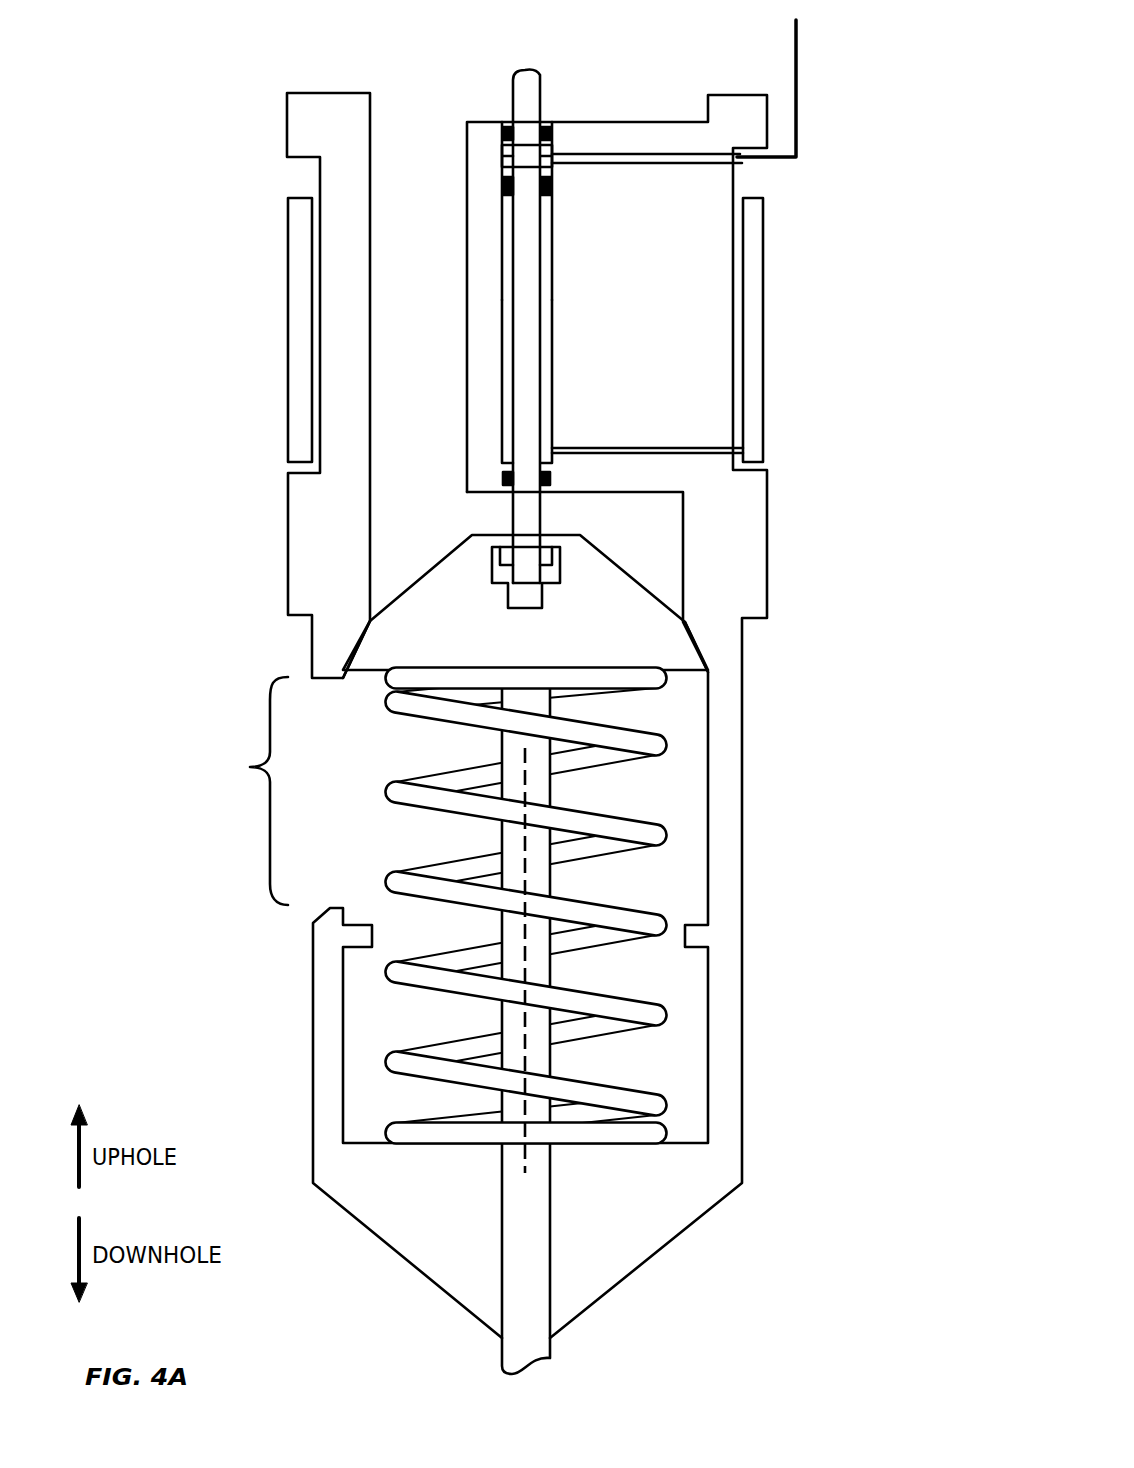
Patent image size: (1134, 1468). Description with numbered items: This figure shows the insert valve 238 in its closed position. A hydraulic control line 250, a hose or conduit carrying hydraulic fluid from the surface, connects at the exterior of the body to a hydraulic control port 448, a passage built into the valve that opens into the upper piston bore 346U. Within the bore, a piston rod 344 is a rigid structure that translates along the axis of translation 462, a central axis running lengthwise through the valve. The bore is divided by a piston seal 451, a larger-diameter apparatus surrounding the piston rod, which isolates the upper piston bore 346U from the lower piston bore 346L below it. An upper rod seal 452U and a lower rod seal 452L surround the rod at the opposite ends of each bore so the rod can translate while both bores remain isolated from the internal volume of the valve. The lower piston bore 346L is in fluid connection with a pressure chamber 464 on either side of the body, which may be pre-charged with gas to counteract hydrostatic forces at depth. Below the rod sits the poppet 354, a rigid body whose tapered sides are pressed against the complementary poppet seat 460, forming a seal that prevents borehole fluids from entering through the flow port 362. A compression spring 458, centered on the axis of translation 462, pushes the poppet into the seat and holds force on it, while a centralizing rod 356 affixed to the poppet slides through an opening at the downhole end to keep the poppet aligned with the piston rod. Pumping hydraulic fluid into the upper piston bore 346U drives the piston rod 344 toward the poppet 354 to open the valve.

The insert valve 238 is at (200, 67).
The hydraulic control line 250 is at (796, 45).
The hydraulic control port 448 is at (660, 158).
The upper piston bore 346U is at (502, 157).
The lower piston bore 346L is at (545, 395).
The piston rod 344 is at (538, 320).
The upper rod seal 452U is at (551, 137).
The lower rod seal 452L is at (552, 480).
The piston seal 451 is at (552, 187).
The pressure chamber 464 is at (822, 337).
The poppet 354 is at (525, 602).
The poppet seat 460 is at (832, 690).
The flow port 362 is at (199, 791).
The compression spring 458 is at (643, 838).
The axis of translation 462 is at (515, 898).
The centralizing rod 356 is at (532, 1210).